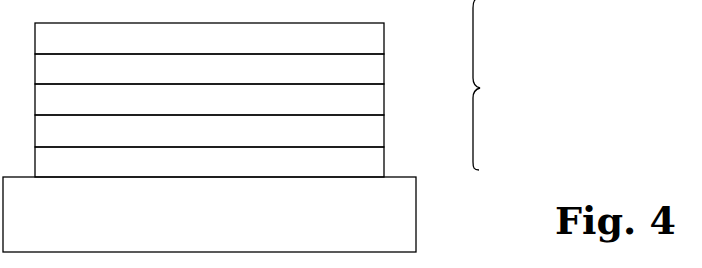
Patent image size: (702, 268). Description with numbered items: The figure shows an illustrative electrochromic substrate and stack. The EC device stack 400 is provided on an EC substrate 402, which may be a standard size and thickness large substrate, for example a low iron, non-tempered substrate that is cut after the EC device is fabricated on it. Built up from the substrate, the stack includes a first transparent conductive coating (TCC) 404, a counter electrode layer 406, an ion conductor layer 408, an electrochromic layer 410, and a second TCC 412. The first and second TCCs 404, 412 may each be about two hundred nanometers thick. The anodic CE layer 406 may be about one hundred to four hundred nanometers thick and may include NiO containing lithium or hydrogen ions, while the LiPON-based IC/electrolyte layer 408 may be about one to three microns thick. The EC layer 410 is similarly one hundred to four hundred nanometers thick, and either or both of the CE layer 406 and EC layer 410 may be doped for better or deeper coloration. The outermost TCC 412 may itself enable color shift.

The electrochromic stack 400 is at (499, 85).
The EC substrate 402 is at (407, 211).
The first transparent conductive coating 404 is at (384, 159).
The counter electrode layer 406 is at (384, 128).
The ion conductor layer 408 is at (384, 100).
The electrochromic layer 410 is at (384, 72).
The second transparent conductive coating 412 is at (384, 40).